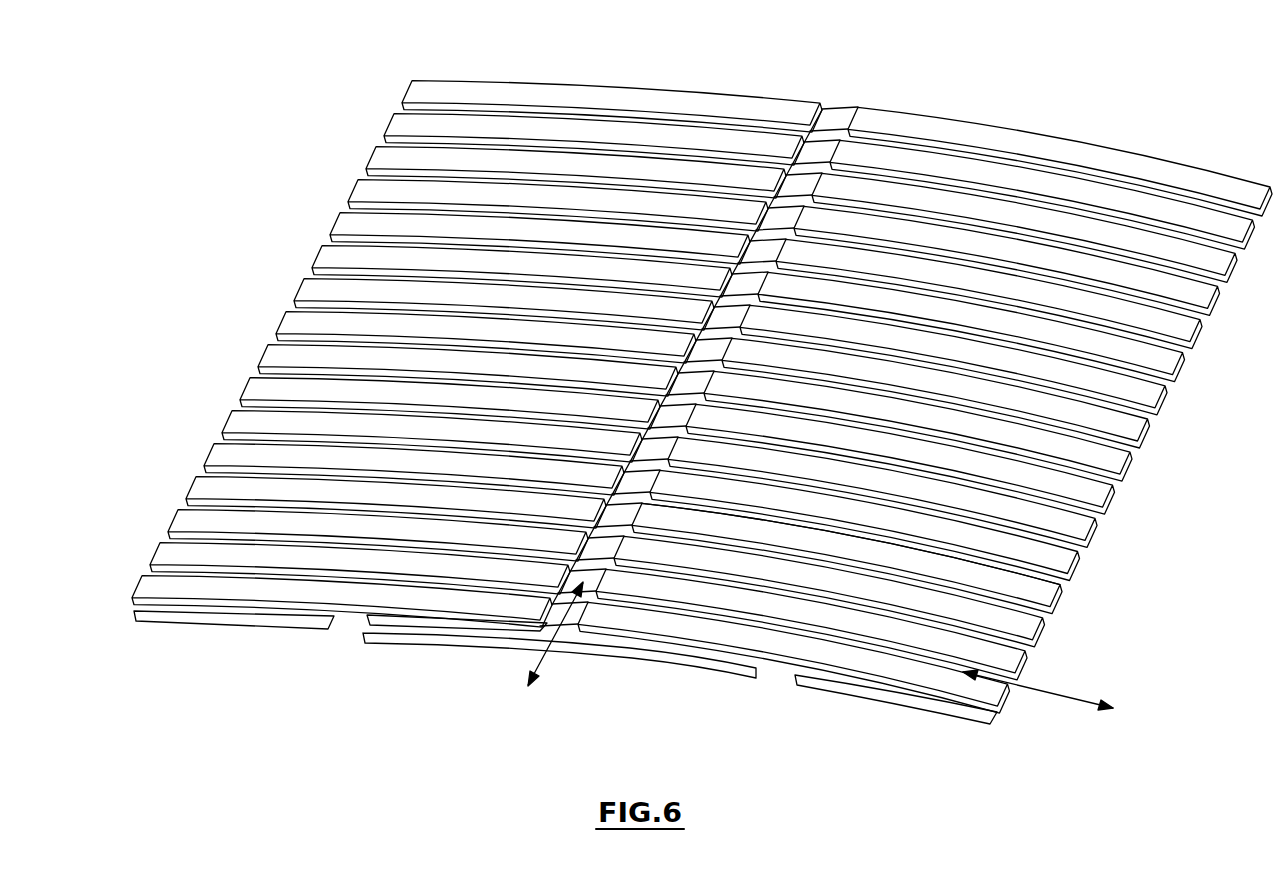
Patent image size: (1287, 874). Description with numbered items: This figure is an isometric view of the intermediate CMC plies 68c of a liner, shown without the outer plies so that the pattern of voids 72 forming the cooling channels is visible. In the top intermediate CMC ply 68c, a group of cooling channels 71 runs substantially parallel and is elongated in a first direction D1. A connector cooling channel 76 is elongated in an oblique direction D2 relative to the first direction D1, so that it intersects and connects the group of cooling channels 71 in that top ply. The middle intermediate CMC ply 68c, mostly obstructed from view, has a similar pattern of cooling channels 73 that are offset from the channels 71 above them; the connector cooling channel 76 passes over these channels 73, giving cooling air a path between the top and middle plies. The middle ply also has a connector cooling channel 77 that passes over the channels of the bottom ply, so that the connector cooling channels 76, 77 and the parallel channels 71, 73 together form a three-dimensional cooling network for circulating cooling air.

The intermediate CMC plies 68c is at (150, 502).
The group of cooling channels 71 is at (672, 116).
The pattern of voids 72 is at (1013, 560).
The cooling channels 73 is at (813, 195).
The connector cooling channel 76 is at (843, 97).
The connector cooling channel 77 is at (352, 622).
The first direction D1 is at (1044, 698).
The oblique direction D2 is at (545, 670).